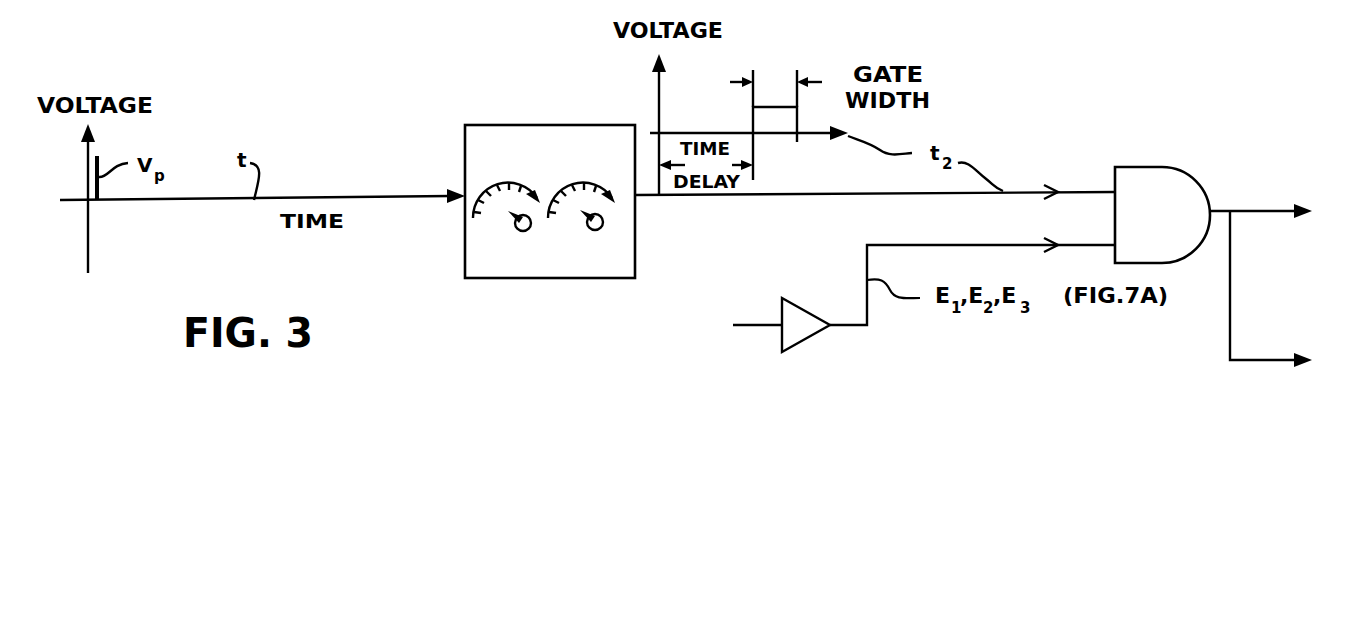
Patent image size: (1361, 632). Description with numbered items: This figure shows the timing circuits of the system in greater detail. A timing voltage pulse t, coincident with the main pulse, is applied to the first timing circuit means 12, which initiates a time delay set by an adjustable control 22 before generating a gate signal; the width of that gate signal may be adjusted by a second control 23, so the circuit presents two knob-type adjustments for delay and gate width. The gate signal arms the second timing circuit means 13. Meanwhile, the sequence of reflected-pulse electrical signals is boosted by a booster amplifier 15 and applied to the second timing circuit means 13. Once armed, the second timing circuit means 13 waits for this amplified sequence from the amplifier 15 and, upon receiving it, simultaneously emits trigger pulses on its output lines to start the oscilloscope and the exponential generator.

The first timing circuit means 12 is at (545, 125).
The second timing circuit means 13 is at (1152, 167).
The booster amplifier 15 is at (803, 305).
The adjustable control 22 is at (513, 227).
The control 23 is at (605, 222).